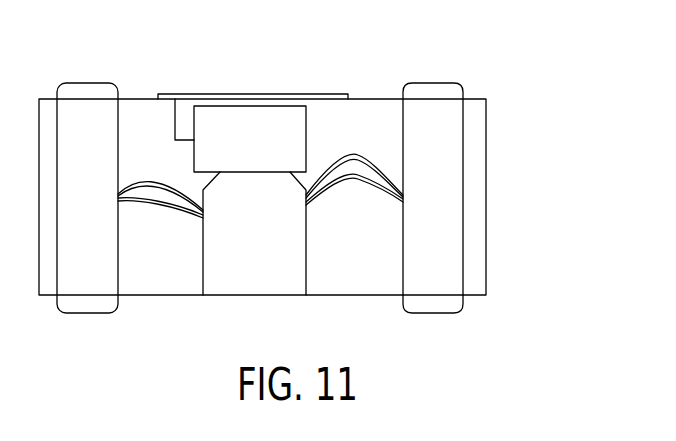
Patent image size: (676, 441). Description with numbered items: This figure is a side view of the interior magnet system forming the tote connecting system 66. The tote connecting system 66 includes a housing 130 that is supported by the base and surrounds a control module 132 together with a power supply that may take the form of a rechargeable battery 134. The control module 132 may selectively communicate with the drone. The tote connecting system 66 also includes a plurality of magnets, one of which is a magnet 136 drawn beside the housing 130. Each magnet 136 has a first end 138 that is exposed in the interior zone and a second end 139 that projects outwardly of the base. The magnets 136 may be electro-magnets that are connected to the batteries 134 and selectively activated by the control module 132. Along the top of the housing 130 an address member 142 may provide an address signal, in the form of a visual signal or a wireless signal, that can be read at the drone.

The tote connecting system 66 is at (512, 266).
The housing 130 is at (472, 139).
The control module 132 is at (300, 107).
The rechargeable battery 134 is at (266, 277).
The magnet 136 is at (440, 192).
The first end 138 is at (433, 88).
The second end 139 is at (413, 299).
The address member 142 is at (257, 97).